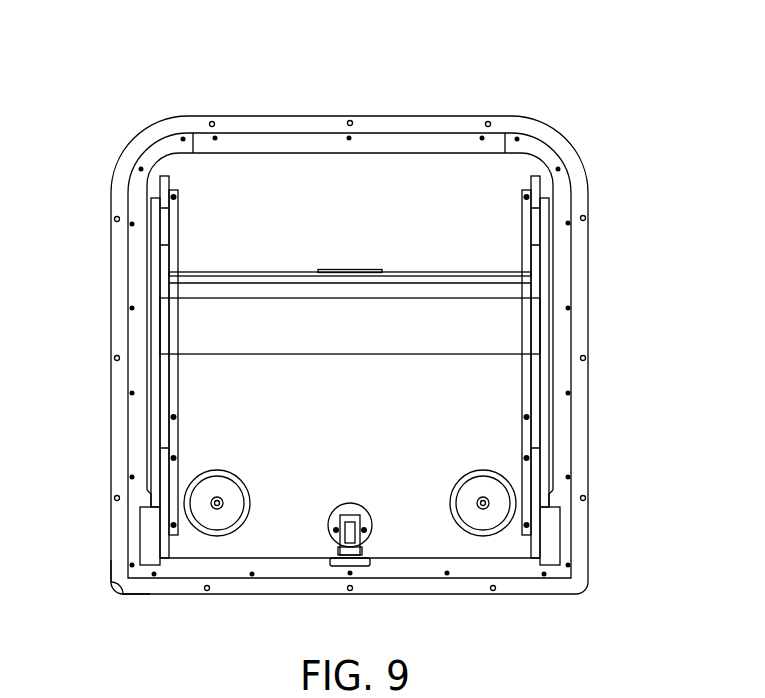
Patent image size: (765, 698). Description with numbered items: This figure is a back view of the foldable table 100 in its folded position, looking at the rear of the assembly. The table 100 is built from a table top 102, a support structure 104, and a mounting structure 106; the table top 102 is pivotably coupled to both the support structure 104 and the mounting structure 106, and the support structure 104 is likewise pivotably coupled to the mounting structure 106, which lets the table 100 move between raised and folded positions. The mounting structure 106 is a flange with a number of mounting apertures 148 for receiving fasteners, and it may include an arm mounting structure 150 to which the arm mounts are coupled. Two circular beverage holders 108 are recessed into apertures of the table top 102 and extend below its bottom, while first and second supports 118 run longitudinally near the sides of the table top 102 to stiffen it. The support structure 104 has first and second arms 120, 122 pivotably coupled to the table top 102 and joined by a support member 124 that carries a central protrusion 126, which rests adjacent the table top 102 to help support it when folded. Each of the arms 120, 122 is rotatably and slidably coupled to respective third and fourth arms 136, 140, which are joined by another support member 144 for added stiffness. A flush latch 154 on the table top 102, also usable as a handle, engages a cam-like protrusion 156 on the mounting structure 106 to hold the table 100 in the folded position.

The foldable table 100 is at (326, 81).
The table top 102 is at (420, 174).
The support structure 104 is at (537, 265).
The mounting structure 106 is at (154, 128).
The beverage holder 108 is at (202, 518).
The support 118 is at (170, 508).
The first arm 120 is at (163, 407).
The second arm 122 is at (538, 180).
The support member 124 is at (248, 277).
The protrusion 126 is at (338, 270).
The third arm 136 is at (153, 265).
The fourth arm 140 is at (543, 468).
The support member 144 is at (527, 333).
The mounting aperture 148 is at (586, 219).
The arm mounting structure 150 is at (121, 585).
The latch 154 is at (367, 542).
The protrusion 156 is at (341, 556).